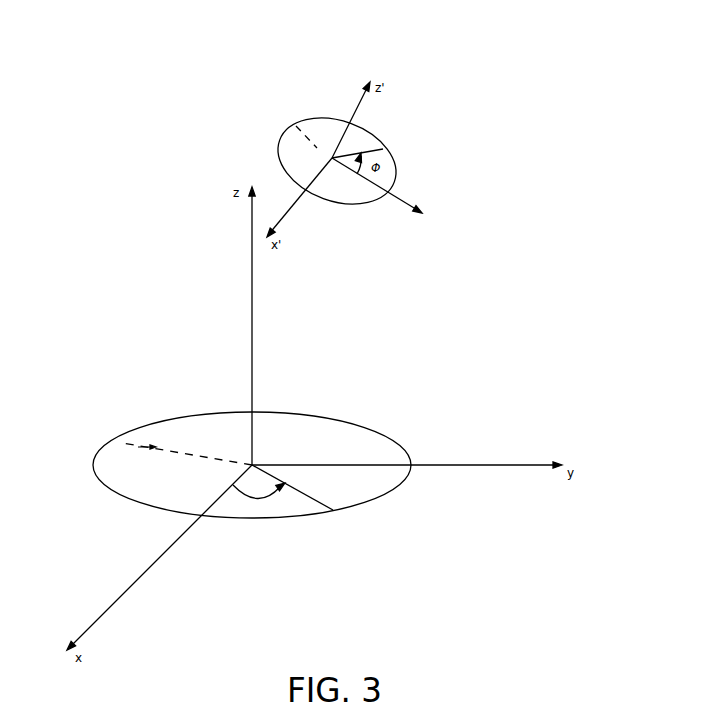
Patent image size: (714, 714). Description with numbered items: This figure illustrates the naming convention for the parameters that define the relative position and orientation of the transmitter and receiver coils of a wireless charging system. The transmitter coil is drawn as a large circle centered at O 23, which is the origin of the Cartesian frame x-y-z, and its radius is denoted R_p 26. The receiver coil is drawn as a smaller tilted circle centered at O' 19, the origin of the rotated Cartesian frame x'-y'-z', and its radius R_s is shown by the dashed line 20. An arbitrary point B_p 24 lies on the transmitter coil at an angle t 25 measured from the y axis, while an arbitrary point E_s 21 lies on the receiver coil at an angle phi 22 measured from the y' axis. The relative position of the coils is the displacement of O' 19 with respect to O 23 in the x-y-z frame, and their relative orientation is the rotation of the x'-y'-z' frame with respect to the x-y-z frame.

The center O' of the receiver coil 19 is at (319, 158).
The dashed line R_s 20 is at (316, 132).
The point E_s 21 is at (420, 140).
The angle phi 22 is at (397, 168).
The center O of the transmitter coil 23 is at (252, 451).
The point B_p 24 is at (362, 522).
The angle t 25 is at (269, 521).
The radius R_p 26 is at (119, 457).